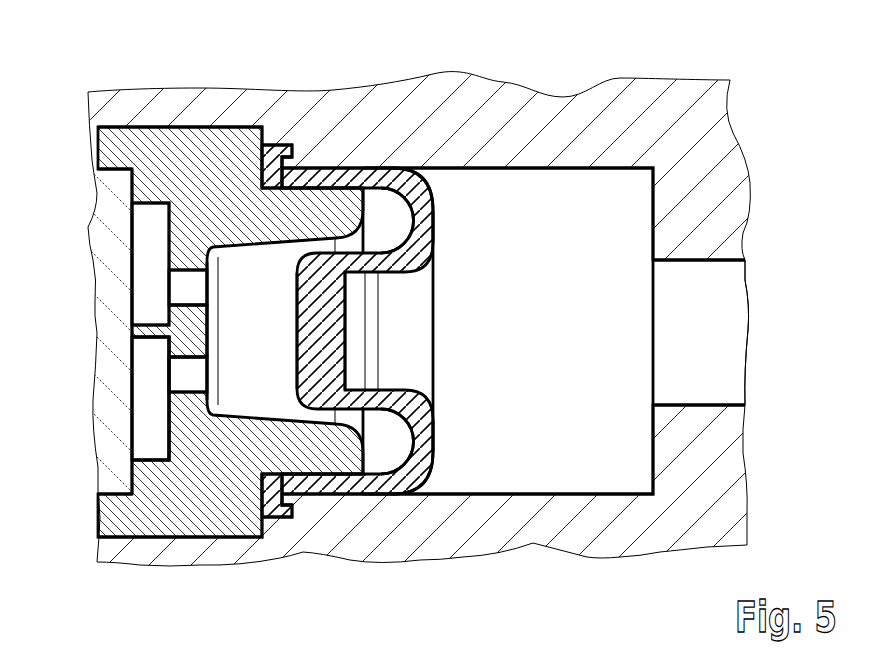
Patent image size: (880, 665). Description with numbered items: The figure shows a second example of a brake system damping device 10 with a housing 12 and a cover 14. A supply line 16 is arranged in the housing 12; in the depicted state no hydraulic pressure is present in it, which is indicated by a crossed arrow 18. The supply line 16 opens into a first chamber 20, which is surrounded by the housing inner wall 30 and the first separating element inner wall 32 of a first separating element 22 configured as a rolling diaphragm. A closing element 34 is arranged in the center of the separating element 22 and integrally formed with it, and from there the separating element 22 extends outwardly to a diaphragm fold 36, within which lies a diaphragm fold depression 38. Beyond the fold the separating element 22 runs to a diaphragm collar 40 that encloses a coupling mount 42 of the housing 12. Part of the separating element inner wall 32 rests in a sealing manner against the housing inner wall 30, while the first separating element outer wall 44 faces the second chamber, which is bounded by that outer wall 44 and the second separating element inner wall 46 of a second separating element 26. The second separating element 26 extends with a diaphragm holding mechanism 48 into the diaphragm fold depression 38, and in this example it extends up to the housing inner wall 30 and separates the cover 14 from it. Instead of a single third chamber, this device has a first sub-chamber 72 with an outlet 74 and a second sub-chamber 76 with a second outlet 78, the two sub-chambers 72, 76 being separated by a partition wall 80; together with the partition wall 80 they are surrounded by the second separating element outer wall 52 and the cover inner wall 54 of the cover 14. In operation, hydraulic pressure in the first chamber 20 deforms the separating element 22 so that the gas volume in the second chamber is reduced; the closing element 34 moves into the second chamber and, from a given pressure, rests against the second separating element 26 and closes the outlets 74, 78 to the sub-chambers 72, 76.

The brake system damping device 10 is at (778, 74).
The housing 12 is at (703, 133).
The cover 14 is at (147, 236).
The supply line 16 is at (736, 284).
The crossed arrow 18 is at (710, 353).
The first chamber 20 is at (630, 465).
The first separating element 22 is at (328, 168).
The second separating element 26 is at (132, 160).
The housing inner wall 30 is at (603, 168).
The first separating element inner wall 32 is at (360, 317).
The closing element 34 is at (318, 354).
The diaphragm fold 36 is at (433, 221).
The diaphragm fold depression 38 is at (420, 237).
The diaphragm collar 40 is at (278, 145).
The coupling mount 42 is at (286, 160).
The first separating element outer wall 44 is at (288, 327).
The second separating element inner wall 46 is at (240, 400).
The diaphragm holding mechanism 48 is at (338, 190).
The second separating element outer wall 52 is at (150, 253).
The cover inner wall 54 is at (147, 218).
The first sub-chamber 72 is at (183, 290).
The outlet 74 is at (175, 335).
The second sub-chamber 76 is at (148, 418).
The second outlet 78 is at (148, 404).
The partition wall 80 is at (185, 378).